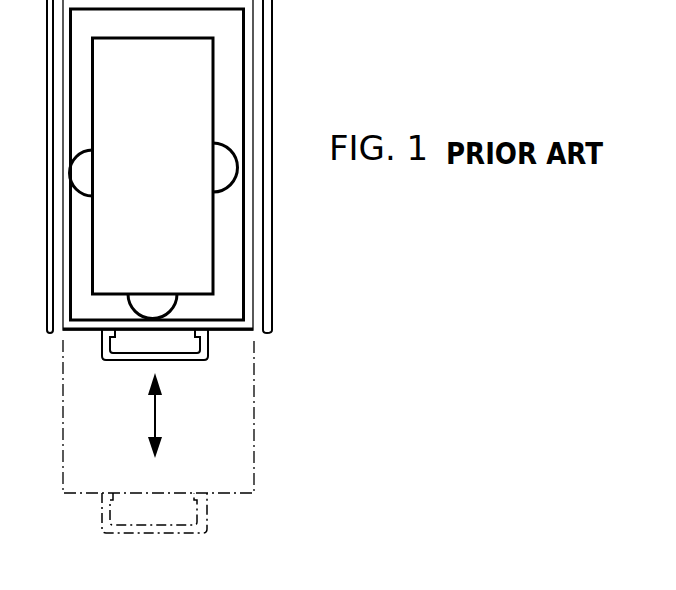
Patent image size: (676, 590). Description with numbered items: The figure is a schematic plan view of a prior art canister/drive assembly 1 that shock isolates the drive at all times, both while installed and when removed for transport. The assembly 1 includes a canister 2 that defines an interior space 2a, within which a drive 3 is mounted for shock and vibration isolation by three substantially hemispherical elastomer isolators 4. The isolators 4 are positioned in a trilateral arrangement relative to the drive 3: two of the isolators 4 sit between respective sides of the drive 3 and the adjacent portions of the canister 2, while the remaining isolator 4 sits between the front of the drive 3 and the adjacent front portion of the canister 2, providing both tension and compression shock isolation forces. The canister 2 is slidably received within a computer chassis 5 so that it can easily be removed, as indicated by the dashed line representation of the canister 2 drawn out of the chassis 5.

The canister/drive assembly 1 is at (301, 345).
The canister 2 is at (256, 460).
The interior space 2a is at (247, 50).
The drive 3 is at (157, 185).
The hemispherical elastomer isolators 4 is at (88, 150).
The computer chassis 5 is at (48, 85).